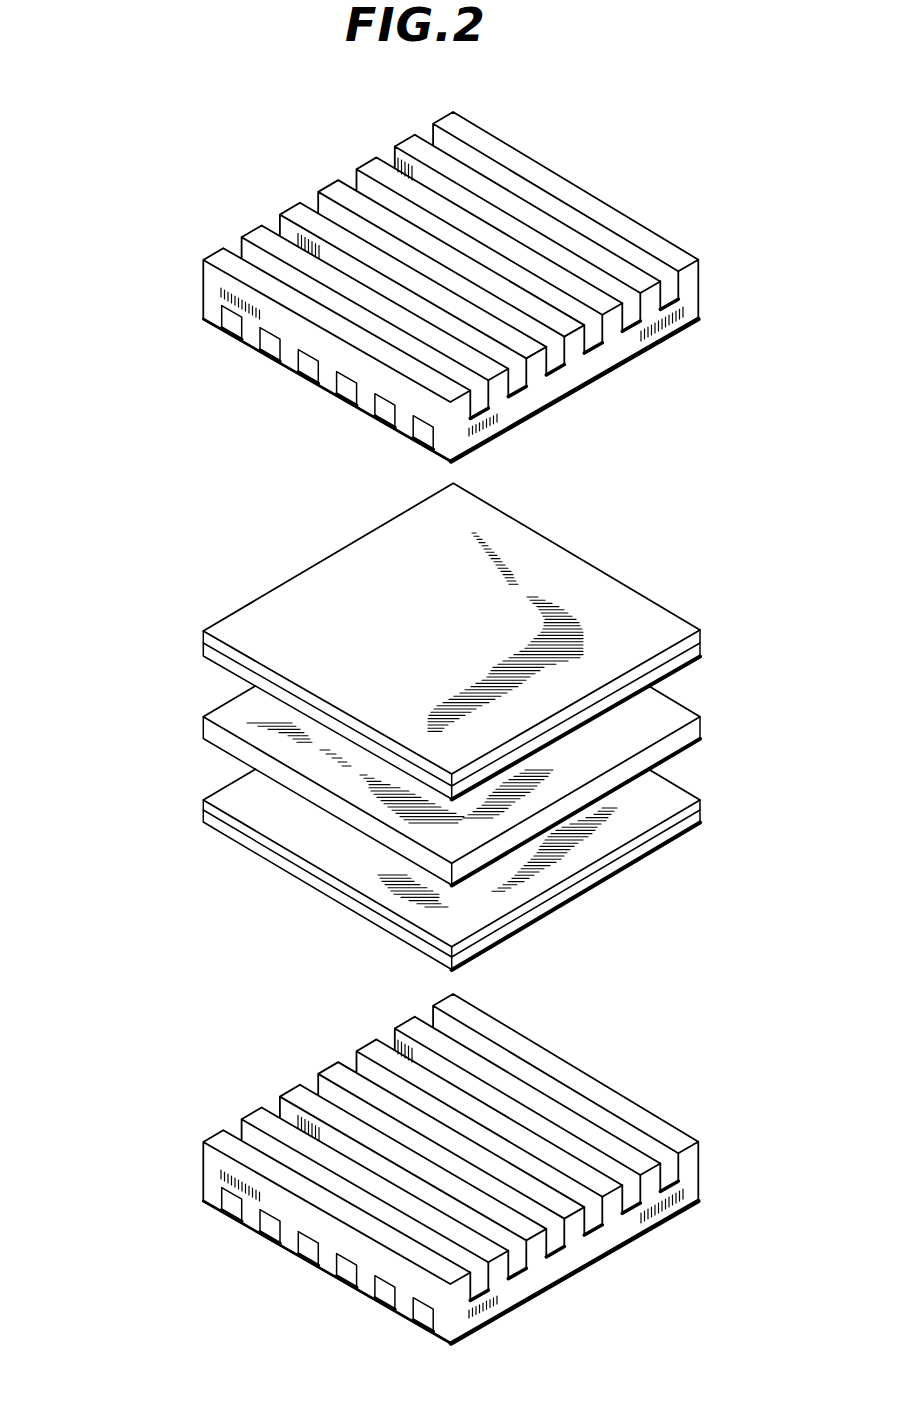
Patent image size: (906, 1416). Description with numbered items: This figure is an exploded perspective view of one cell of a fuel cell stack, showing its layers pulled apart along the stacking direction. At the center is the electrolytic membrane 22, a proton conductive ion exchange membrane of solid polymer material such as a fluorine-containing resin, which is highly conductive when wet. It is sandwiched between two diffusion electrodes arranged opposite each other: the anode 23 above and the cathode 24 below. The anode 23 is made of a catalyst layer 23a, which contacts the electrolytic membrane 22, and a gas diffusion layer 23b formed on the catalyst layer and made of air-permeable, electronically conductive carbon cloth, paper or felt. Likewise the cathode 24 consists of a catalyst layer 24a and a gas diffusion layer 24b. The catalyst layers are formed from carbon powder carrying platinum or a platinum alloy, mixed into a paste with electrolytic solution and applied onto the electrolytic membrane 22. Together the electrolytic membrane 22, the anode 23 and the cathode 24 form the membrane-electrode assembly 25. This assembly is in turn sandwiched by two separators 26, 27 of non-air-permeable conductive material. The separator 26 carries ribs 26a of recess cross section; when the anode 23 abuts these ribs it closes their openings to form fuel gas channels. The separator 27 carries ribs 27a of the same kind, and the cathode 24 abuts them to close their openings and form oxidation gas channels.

The electrolytic membrane 22 is at (207, 728).
The anode 23 is at (386, 641).
The catalyst layer 23a is at (207, 645).
The gas diffusion layer 23b is at (207, 635).
The cathode 24 is at (386, 869).
The catalyst layer 24a is at (207, 810).
The gas diffusion layer 24b is at (207, 818).
The membrane-electrode assembly 25 is at (364, 726).
The separator 26 is at (411, 287).
The ribs 26a is at (270, 351).
The separator 27 is at (493, 1169).
The ribs 27a is at (652, 1180).